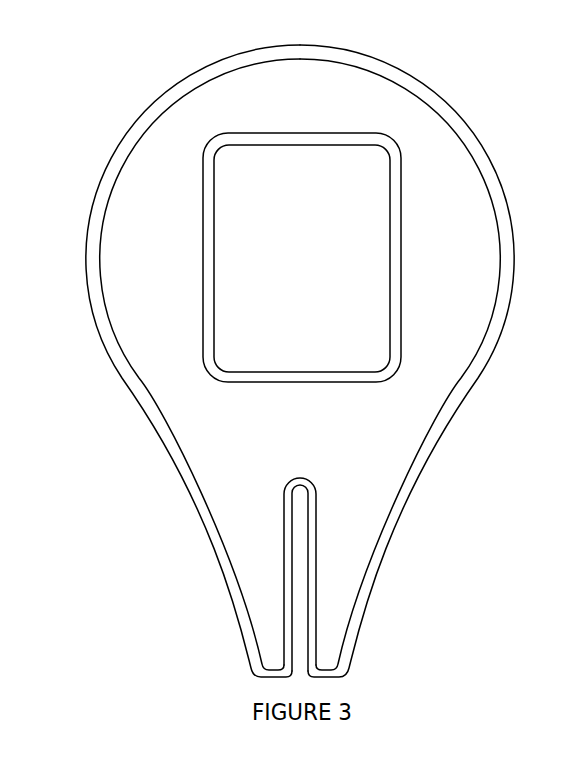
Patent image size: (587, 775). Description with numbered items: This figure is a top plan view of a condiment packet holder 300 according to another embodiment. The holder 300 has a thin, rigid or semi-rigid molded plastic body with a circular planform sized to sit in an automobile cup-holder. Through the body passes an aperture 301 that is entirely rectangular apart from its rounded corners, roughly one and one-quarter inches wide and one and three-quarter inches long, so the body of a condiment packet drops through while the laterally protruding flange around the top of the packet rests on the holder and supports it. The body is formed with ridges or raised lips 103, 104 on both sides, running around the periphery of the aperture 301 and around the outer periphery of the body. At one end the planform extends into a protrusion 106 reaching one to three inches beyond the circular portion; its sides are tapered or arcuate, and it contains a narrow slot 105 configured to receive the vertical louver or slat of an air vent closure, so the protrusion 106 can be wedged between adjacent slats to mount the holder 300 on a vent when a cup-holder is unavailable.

The condiment packet holder 300 is at (67, 491).
The raised lip 103 is at (302, 237).
The aperture 301 is at (322, 307).
The raised lip 104 is at (110, 352).
The slot 105 is at (300, 493).
The protrusion 106 is at (377, 565).